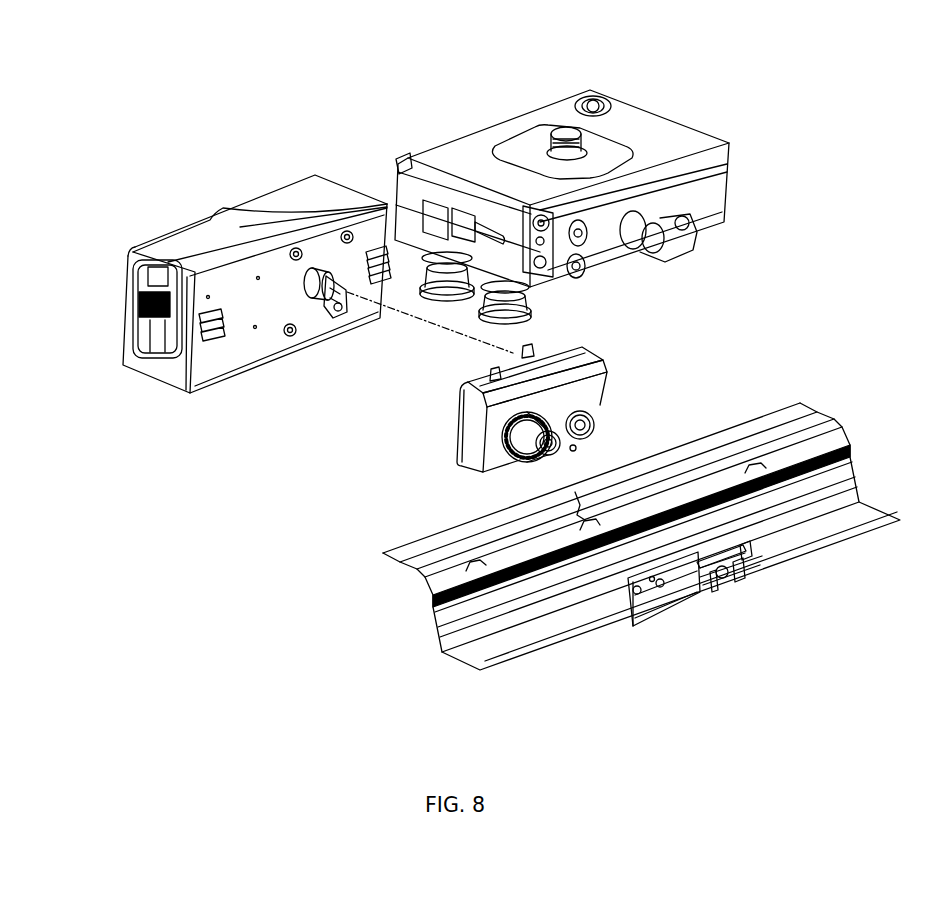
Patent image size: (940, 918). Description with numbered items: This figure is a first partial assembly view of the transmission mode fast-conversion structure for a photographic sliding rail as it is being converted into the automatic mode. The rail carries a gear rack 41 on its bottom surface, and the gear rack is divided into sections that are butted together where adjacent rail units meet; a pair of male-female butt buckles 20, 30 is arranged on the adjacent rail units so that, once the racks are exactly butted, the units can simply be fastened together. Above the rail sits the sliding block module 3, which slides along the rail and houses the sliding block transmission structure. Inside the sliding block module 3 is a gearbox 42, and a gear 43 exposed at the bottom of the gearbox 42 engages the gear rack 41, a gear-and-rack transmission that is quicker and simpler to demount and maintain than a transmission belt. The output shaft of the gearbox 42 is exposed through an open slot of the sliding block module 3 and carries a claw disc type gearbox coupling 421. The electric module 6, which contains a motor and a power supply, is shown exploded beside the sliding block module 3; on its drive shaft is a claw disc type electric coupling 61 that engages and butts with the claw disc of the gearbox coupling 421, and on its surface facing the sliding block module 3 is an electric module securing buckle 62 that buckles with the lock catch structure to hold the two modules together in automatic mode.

The sliding block module 3 is at (660, 152).
The electric module 6 is at (268, 232).
The electric module securing buckle 62 is at (134, 292).
The claw disc type electric coupling 61 is at (323, 300).
The gearbox 42 is at (490, 437).
The claw disc type gearbox coupling 421 is at (533, 350).
The gear 43 is at (505, 460).
The gear rack 41 is at (803, 462).
The male butt buckle 20 is at (737, 585).
The female butt buckle 30 is at (663, 608).